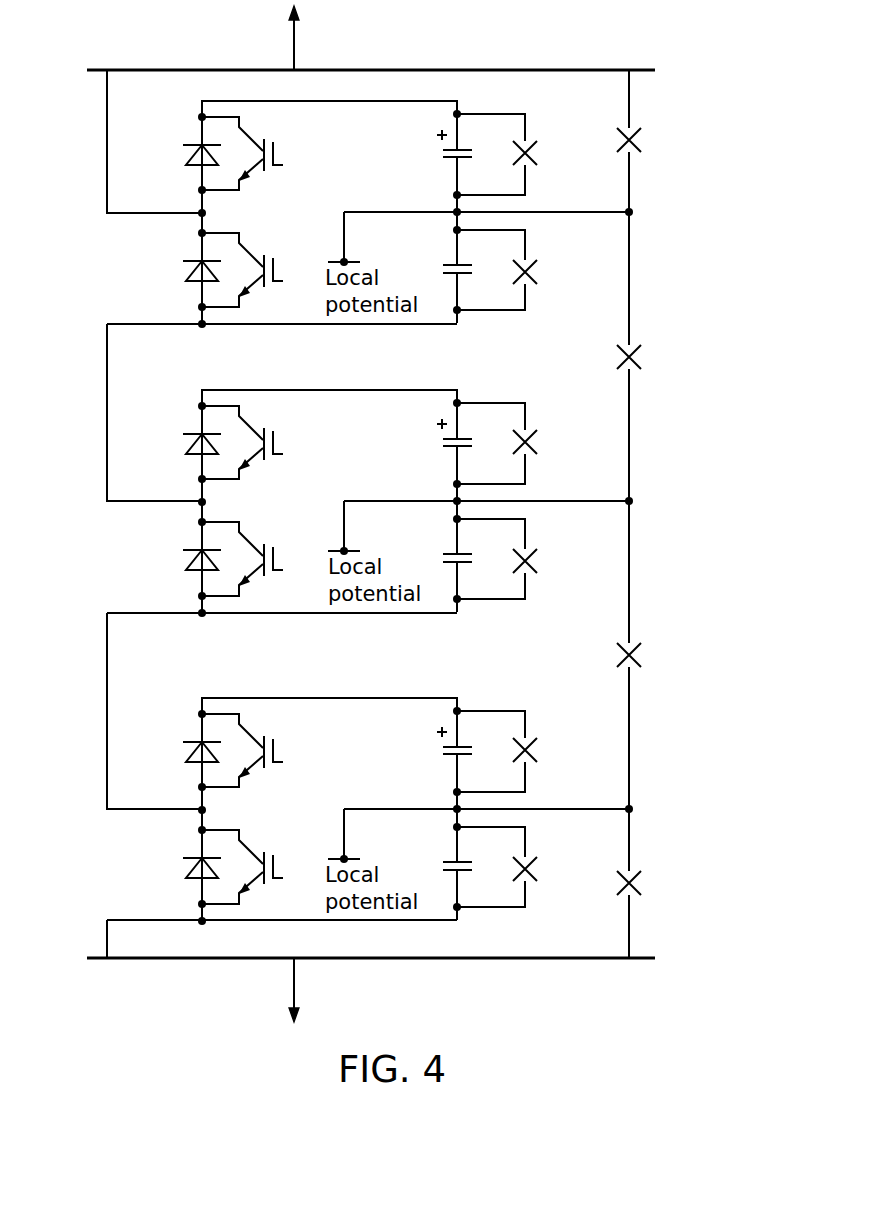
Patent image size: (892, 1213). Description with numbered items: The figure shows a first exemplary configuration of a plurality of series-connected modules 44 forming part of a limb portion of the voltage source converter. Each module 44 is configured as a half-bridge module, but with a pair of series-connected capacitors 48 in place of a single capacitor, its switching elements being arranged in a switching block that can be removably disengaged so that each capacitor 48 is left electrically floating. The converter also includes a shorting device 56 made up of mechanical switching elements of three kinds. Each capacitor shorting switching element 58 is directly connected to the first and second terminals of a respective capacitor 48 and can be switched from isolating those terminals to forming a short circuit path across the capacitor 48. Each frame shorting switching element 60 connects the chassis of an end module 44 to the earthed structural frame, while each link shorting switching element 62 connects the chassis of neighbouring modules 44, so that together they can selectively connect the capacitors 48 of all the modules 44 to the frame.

The module 44 is at (145, 845).
The capacitor 48 is at (441, 859).
The shorting device 56 is at (668, 498).
The capacitor shorting switching element 58 is at (539, 867).
The frame shorting switching element 60 is at (642, 885).
The link shorting switching element 62 is at (642, 658).